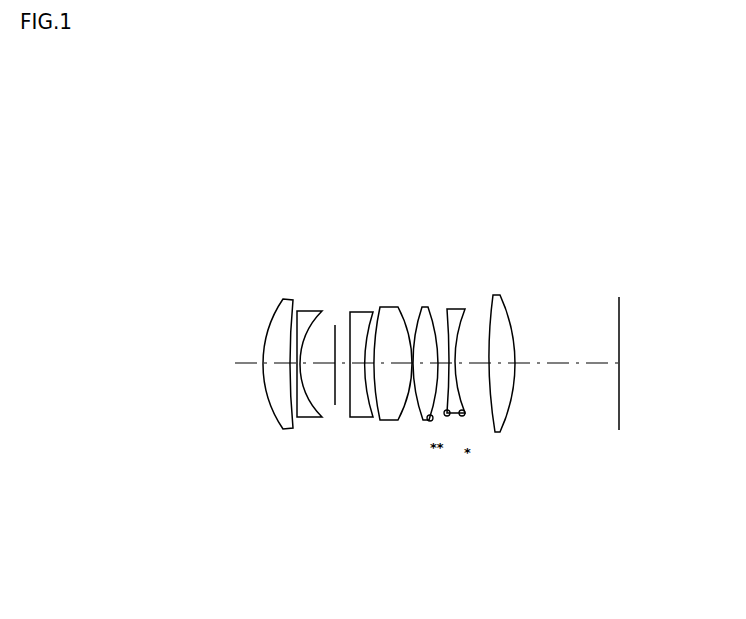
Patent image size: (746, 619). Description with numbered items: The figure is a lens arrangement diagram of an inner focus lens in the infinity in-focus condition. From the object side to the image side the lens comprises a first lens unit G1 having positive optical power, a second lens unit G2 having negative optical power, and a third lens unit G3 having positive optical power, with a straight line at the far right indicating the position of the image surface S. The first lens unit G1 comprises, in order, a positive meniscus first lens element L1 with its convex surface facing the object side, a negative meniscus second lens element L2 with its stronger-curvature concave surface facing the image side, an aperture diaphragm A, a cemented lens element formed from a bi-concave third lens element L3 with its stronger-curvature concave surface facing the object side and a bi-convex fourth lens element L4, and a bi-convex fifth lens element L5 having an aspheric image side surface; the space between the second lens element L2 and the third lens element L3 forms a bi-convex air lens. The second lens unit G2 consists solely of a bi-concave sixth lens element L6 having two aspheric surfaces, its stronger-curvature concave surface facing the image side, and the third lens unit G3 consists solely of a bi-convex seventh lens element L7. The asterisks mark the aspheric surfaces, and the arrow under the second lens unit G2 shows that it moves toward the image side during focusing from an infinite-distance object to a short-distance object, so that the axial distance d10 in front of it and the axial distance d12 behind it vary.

The first lens element L1 is at (287, 300).
The second lens element L2 is at (310, 315).
The aperture diaphragm A is at (335, 324).
The third lens element L3 is at (363, 313).
The fourth lens element L4 is at (388, 312).
The fifth lens element L5 is at (425, 307).
The sixth lens element L6 is at (455, 315).
The seventh lens element L7 is at (498, 298).
The image surface S is at (619, 333).
The axial distance d10 is at (448, 416).
The axial distance d12 is at (470, 365).
The first lens unit G1 is at (350, 366).
The second lens unit G2 is at (443, 378).
The third lens unit G3 is at (507, 366).